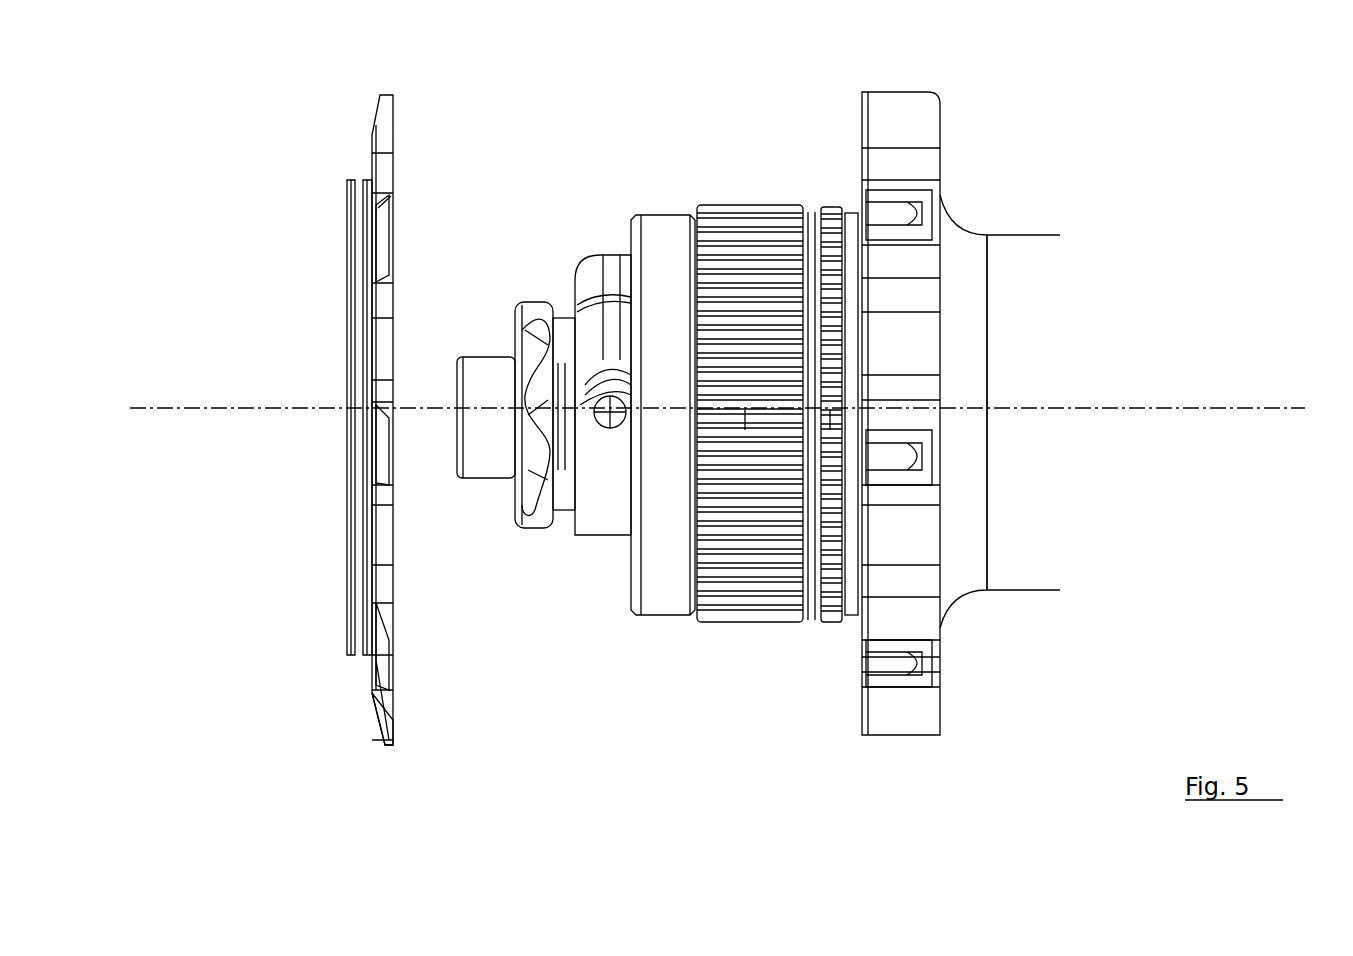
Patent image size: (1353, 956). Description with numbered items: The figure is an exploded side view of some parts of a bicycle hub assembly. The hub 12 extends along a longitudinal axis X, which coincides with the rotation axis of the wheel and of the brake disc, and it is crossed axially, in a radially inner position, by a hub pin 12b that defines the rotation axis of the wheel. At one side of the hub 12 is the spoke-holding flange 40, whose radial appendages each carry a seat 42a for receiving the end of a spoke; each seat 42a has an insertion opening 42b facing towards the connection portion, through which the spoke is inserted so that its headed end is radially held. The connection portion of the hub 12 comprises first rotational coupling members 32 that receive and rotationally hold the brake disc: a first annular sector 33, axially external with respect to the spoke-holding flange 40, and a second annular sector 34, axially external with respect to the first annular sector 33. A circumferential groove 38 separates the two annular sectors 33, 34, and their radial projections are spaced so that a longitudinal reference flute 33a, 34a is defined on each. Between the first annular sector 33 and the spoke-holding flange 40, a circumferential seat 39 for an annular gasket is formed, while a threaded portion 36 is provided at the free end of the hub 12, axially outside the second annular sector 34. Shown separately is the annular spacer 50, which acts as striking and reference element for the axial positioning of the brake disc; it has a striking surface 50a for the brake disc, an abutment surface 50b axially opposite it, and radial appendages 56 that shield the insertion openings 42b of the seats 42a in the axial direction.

The hub 12 is at (1065, 446).
The hub pin 12b is at (488, 478).
The first rotational coupling members 32 is at (712, 652).
The first annular sector 33 is at (826, 210).
The longitudinal reference flute 33a is at (830, 410).
The second annular sector 34 is at (753, 205).
The longitudinal reference flute 34a is at (745, 410).
The threaded portion 36 is at (662, 228).
The circumferential groove 38 is at (815, 230).
The circumferential seat 39 is at (851, 170).
The spoke-holding flange 40 is at (945, 128).
The seat 42a is at (898, 443).
The insertion opening 42b is at (865, 665).
The spacer 50 is at (368, 428).
The striking surface 50a is at (347, 213).
The abutment surface 50b is at (393, 622).
The appendages 56 is at (378, 235).
The longitudinal axis X is at (1255, 406).